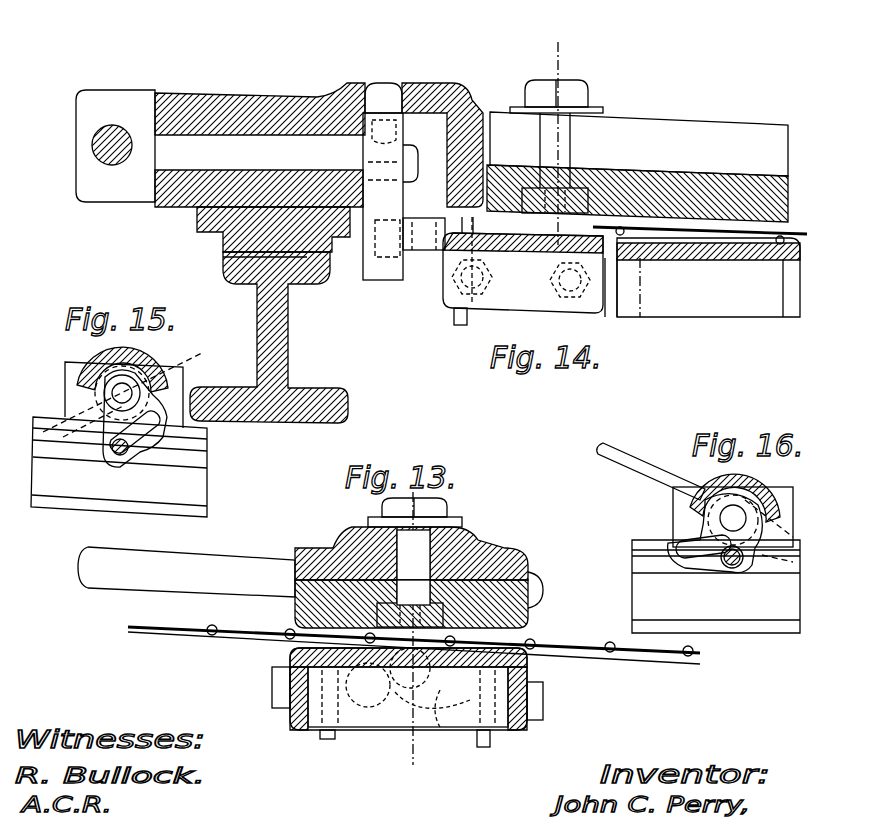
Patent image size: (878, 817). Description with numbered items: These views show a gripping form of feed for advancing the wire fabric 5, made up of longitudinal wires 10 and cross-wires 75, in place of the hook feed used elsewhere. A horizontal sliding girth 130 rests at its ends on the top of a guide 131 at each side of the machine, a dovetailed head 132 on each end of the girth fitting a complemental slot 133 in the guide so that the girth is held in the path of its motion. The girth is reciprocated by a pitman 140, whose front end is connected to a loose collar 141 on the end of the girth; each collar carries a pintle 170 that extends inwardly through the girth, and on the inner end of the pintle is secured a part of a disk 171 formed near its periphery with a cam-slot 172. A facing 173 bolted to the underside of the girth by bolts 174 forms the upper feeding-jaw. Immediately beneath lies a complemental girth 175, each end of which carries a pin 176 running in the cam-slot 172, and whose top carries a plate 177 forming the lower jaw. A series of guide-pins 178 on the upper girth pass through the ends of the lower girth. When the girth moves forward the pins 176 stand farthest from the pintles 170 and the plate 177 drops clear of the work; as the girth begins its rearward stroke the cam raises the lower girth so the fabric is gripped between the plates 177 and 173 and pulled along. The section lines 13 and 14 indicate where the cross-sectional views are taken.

In FIG. 14, the fabric 5 is at (765, 242).
In FIG. 13, the fabric 5 is at (580, 655).
In FIG. 13, the longitudinal wire 10 is at (665, 666).
In FIG. 14, the section line 13 13 is at (637, 285).
In FIG. 13, the section line 14 14 is at (382, 510).
In FIG. 14, the cross-wire 75 is at (625, 248).
In FIG. 13, the cross-wire 75 is at (700, 651).
In FIG. 14, the horizontal sliding girth 130 is at (665, 130).
In FIG. 14, the guide 131 is at (288, 318).
In FIG. 14, the dovetailed head 132 is at (205, 246).
In FIG. 14, the complemental slot 133 is at (322, 272).
In FIG. 14, the pitman 140 is at (105, 150).
In FIG. 15, the pitman 140 is at (57, 415).
In FIG. 16, the pitman 140 is at (622, 437).
In FIG. 13, the pitman 140 is at (186, 572).
In FIG. 14, the loose collar 141 is at (104, 96).
In FIG. 14, the pintle 170 is at (243, 143).
In FIG. 15, the pintle 170 is at (157, 370).
In FIG. 16, the pintle 170 is at (728, 518).
In FIG. 13, the pintle 170 is at (411, 553).
In FIG. 14, the disk 171 is at (420, 178).
In FIG. 15, the disk 171 is at (117, 418).
In FIG. 16, the disk 171 is at (697, 532).
In FIG. 13, the disk 171 is at (315, 730).
In FIG. 15, the cam-slot 172 is at (183, 450).
In FIG. 16, the cam-slot 172 is at (690, 557).
In FIG. 13, the cam-slot 172 is at (440, 732).
In FIG. 14, the facing 173 is at (752, 175).
In FIG. 13, the facing 173 is at (530, 602).
In FIG. 14, the bolt 174 is at (578, 98).
In FIG. 13, the bolt 174 is at (447, 510).
In FIG. 14, the complemental girth 175 is at (697, 318).
In FIG. 13, the complemental girth 175 is at (290, 700).
In FIG. 14, the pin 176 is at (403, 262).
In FIG. 15, the pin 176 is at (127, 452).
In FIG. 16, the pin 176 is at (733, 568).
In FIG. 13, the pin 176 is at (375, 727).
In FIG. 14, the plate 177 is at (796, 318).
In FIG. 13, the plate 177 is at (290, 655).
In FIG. 14, the guide-pin 178 is at (462, 327).
In FIG. 13, the guide-pin 178 is at (322, 741).